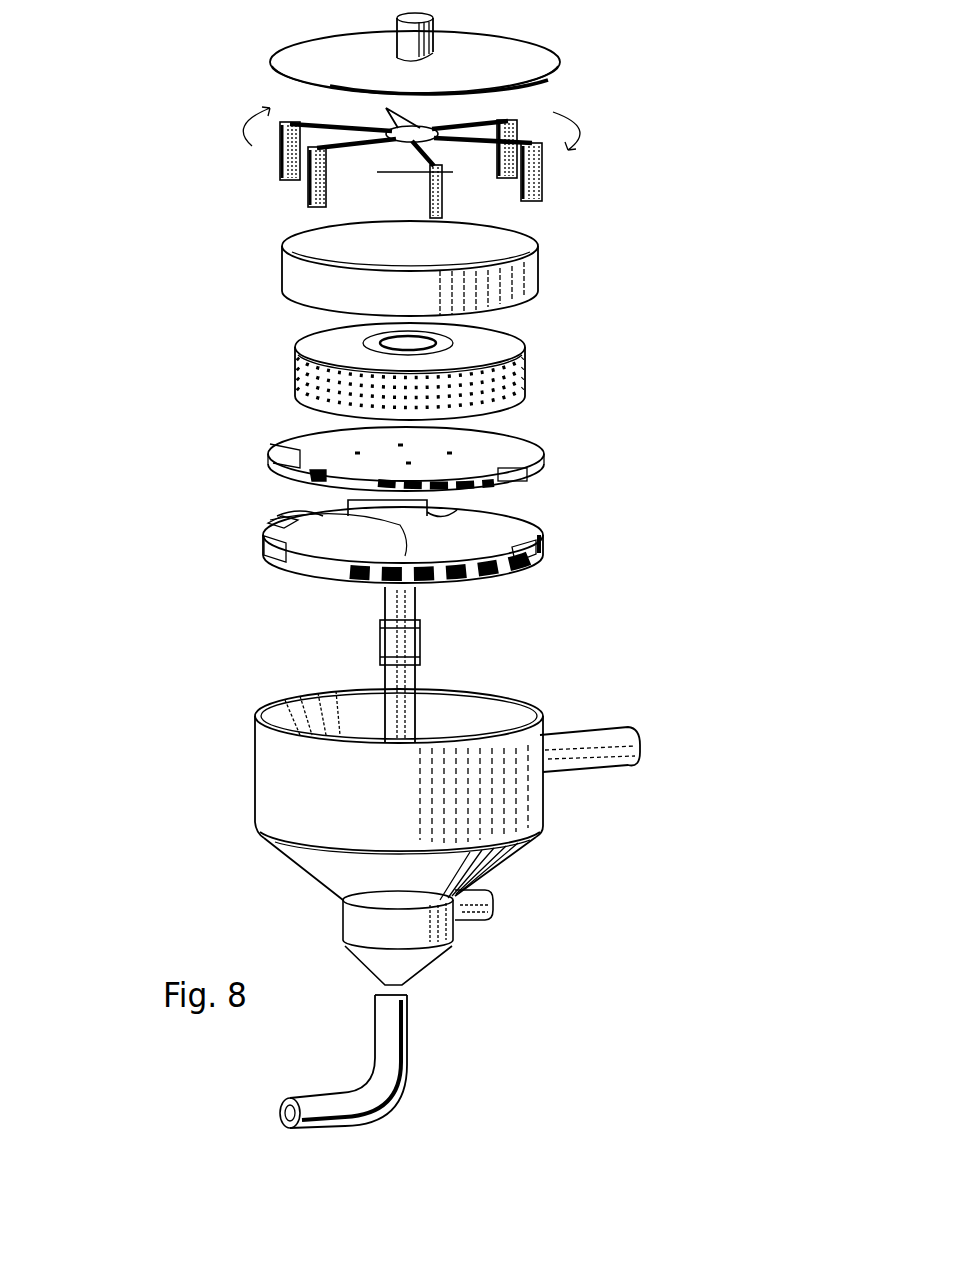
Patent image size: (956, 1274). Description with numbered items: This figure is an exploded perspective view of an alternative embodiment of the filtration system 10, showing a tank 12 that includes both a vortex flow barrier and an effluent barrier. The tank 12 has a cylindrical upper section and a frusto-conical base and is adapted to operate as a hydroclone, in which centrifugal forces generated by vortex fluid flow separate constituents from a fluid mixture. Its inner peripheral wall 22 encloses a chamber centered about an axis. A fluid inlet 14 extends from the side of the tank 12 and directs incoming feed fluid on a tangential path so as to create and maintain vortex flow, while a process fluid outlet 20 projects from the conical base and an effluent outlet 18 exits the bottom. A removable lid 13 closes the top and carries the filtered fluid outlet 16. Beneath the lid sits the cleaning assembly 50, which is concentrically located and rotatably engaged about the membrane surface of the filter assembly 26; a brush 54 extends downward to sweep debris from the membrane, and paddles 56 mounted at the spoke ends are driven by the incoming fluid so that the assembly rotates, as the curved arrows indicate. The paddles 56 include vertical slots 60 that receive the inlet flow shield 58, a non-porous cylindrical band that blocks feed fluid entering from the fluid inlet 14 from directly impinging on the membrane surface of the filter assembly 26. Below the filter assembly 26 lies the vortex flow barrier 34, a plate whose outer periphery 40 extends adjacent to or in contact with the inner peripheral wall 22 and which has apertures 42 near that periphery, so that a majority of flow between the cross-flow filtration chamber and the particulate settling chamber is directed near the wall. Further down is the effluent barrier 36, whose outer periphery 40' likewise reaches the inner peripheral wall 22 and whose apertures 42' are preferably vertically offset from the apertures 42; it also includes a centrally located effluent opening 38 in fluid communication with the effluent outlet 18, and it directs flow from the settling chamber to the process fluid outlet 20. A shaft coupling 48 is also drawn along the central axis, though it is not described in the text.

The system 10 is at (152, 313).
The tank 12 is at (533, 833).
The removable lid 13 is at (355, 48).
The fluid inlet 14 is at (590, 768).
The filtered fluid outlet 16 is at (435, 22).
The effluent outlet 18 is at (407, 1027).
The process fluid outlet 20 is at (473, 923).
The inner peripheral wall 22 is at (337, 688).
The filter assembly 26 is at (525, 385).
The vortex flow barrier 34 is at (515, 455).
The effluent barrier 36 is at (527, 535).
The effluent opening 38 is at (268, 550).
The outer periphery 40 is at (555, 482).
The outer periphery 40' is at (564, 566).
The apertures 42 is at (244, 451).
The apertures 42' is at (228, 502).
The shaft coupling 48 is at (418, 642).
The cleaning assembly 50 is at (455, 135).
The brush 54 is at (508, 200).
The paddles 56 is at (545, 178).
The inlet flow shield 58 is at (540, 278).
The vertical slots 60 is at (300, 180).